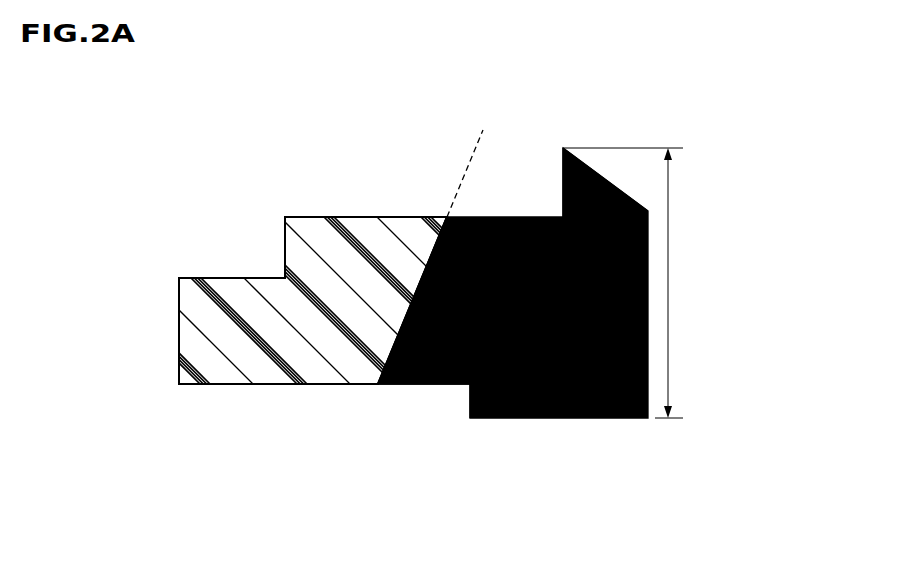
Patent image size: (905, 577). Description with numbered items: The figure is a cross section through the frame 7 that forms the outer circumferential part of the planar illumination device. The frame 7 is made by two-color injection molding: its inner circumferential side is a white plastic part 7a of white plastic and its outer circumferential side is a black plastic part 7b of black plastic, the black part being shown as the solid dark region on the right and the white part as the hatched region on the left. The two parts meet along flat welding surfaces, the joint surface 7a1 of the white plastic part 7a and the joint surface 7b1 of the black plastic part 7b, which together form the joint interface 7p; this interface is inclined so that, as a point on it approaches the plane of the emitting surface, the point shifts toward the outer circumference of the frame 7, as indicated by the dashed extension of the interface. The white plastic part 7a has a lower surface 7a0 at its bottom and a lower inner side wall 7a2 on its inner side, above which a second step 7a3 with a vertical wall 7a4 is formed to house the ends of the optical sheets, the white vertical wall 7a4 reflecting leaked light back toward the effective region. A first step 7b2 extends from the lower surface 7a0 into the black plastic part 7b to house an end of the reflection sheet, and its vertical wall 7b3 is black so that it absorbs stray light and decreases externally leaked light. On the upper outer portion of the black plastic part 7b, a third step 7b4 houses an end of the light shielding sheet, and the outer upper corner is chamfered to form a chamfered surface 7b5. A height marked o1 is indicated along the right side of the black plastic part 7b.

The frame 7 is at (391, 104).
The white plastic part 7a is at (233, 370).
The lower surface of the white plastic part 7a0 is at (270, 385).
The joint surface of the white plastic part 7a1 is at (362, 358).
The lower inner side wall 7a2 is at (178, 322).
The second step 7a3 is at (223, 277).
The vertical wall of the white plastic part 7a4 is at (283, 250).
The black plastic part 7b is at (587, 418).
The joint surface of the black plastic part 7b1 is at (428, 256).
The first step 7b2 is at (408, 385).
The vertical wall of the first step 7b3 is at (470, 398).
The third step 7b4 is at (545, 193).
The chamfered surface 7b5 is at (612, 180).
The joint interface 7p is at (478, 148).
The height dimension of black plastic part o1 is at (629, 283).